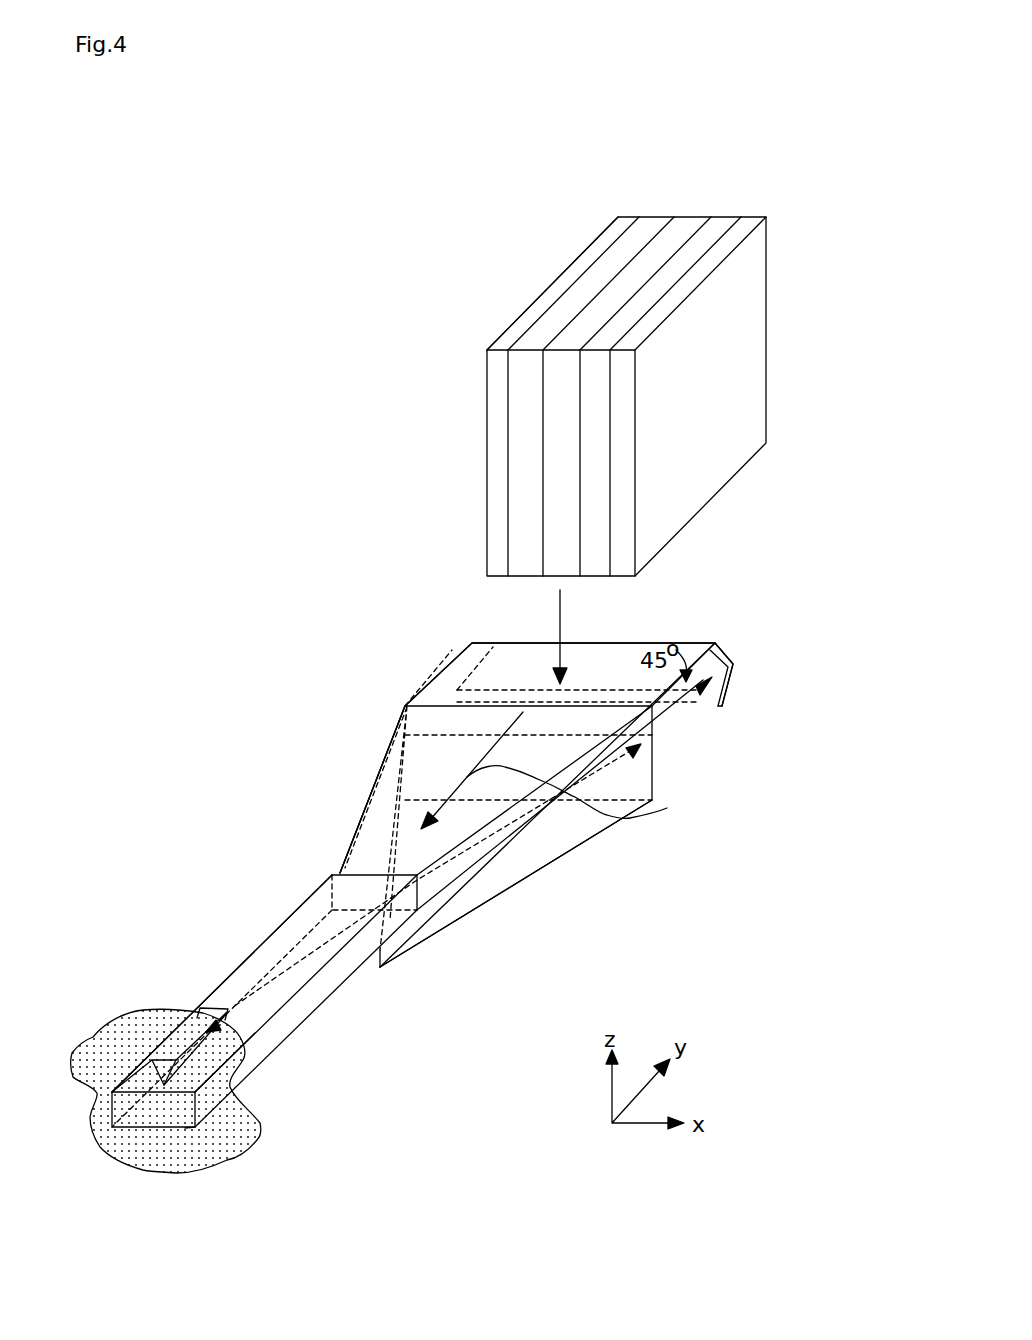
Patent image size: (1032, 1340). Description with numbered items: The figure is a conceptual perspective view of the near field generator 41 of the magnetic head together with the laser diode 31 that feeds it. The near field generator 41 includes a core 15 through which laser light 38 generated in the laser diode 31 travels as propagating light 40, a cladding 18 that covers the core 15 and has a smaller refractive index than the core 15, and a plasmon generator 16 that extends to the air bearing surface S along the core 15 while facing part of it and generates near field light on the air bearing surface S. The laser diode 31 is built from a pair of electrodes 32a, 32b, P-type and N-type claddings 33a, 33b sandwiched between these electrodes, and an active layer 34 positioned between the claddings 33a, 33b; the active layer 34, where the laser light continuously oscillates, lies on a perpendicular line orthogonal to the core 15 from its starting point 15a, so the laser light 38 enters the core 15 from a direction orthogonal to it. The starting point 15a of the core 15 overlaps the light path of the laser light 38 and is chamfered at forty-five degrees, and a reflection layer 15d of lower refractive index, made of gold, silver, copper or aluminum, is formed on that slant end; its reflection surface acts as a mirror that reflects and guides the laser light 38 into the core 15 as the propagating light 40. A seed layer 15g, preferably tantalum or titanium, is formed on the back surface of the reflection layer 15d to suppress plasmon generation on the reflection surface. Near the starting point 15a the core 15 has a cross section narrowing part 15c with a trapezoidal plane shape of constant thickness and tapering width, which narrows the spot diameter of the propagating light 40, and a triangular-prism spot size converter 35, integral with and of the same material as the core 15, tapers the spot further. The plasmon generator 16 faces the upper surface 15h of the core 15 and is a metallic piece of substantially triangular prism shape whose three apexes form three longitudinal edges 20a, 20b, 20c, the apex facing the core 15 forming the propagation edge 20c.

The laser diode 31 is at (663, 128).
The electrode 32a is at (570, 272).
The electrode 32b is at (755, 215).
The cladding 33a is at (617, 255).
The cladding 33b is at (720, 230).
The active layer 34 is at (670, 245).
The laser light 38 is at (562, 612).
The core 15 is at (482, 847).
The starting point 15a is at (463, 660).
The cross section narrowing part 15c is at (382, 782).
The reflection layer 15d is at (725, 645).
The seed layer 15g is at (718, 710).
The upper surface 15h is at (280, 940).
The plasmon generator 16 is at (182, 1042).
The cladding 18 is at (782, 744).
The edge 20a is at (150, 1050).
The edge 20b is at (262, 1033).
The propagation edge 20c is at (185, 1128).
The spot size converter 35 is at (575, 833).
The propagating light 40 is at (590, 792).
The near field generator 41 is at (398, 686).
The air bearing surface S is at (260, 1120).